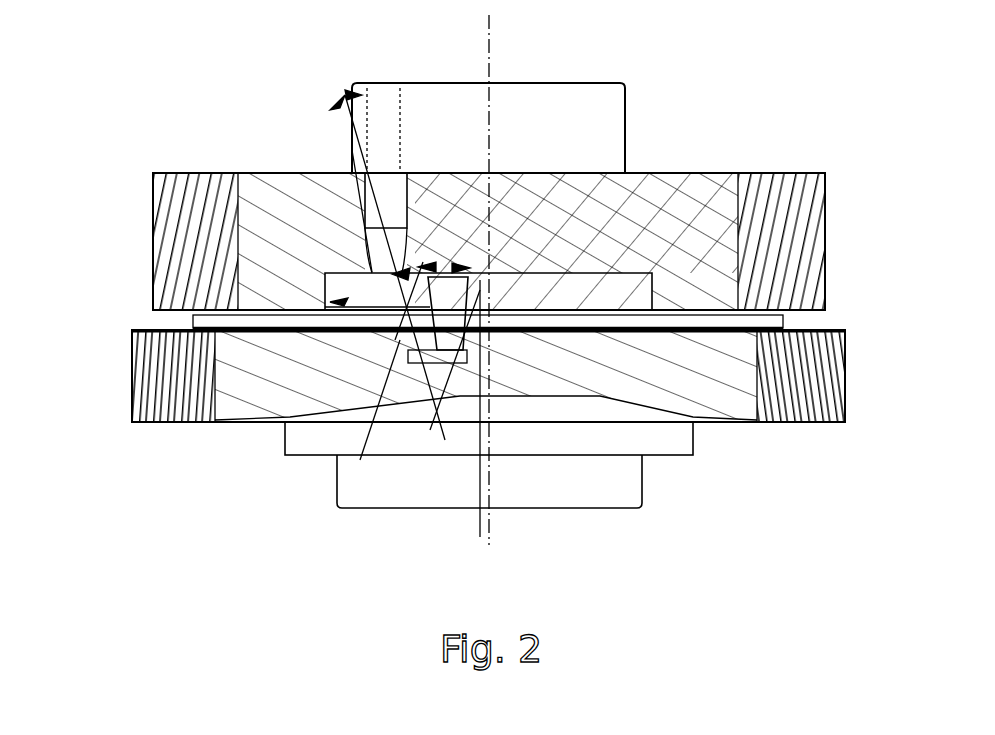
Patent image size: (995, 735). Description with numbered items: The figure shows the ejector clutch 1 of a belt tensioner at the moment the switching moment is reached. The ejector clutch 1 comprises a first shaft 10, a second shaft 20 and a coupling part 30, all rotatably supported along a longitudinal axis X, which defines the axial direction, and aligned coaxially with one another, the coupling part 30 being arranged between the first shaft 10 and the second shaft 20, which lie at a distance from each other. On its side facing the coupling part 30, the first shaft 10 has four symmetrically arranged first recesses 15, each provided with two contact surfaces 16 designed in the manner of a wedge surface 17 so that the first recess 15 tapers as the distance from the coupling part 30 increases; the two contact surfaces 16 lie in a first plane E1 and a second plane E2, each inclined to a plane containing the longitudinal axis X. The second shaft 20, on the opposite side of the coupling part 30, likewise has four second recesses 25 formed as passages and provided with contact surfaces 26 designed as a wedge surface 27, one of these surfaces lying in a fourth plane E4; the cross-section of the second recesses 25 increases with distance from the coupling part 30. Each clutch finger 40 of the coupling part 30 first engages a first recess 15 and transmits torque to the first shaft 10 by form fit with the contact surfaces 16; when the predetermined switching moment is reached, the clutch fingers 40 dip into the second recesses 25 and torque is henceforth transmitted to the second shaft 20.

The ejector clutch 1 is at (192, 134).
The second shaft 20 is at (225, 205).
The contact surfaces 26 is at (488, 160).
The wedge surface 27 is at (372, 88).
The clutch finger 40 is at (600, 272).
The second recesses 25 is at (415, 215).
The longitudinal axis X is at (490, 105).
The coupling part 30 is at (787, 317).
The first shaft 10 is at (252, 380).
The first recesses 15 is at (306, 416).
The contact surfaces 16 is at (550, 454).
The wedge surface 17 is at (565, 392).
The first plane E1 is at (462, 330).
The second plane E2 is at (410, 360).
The fourth plane E4 is at (345, 170).